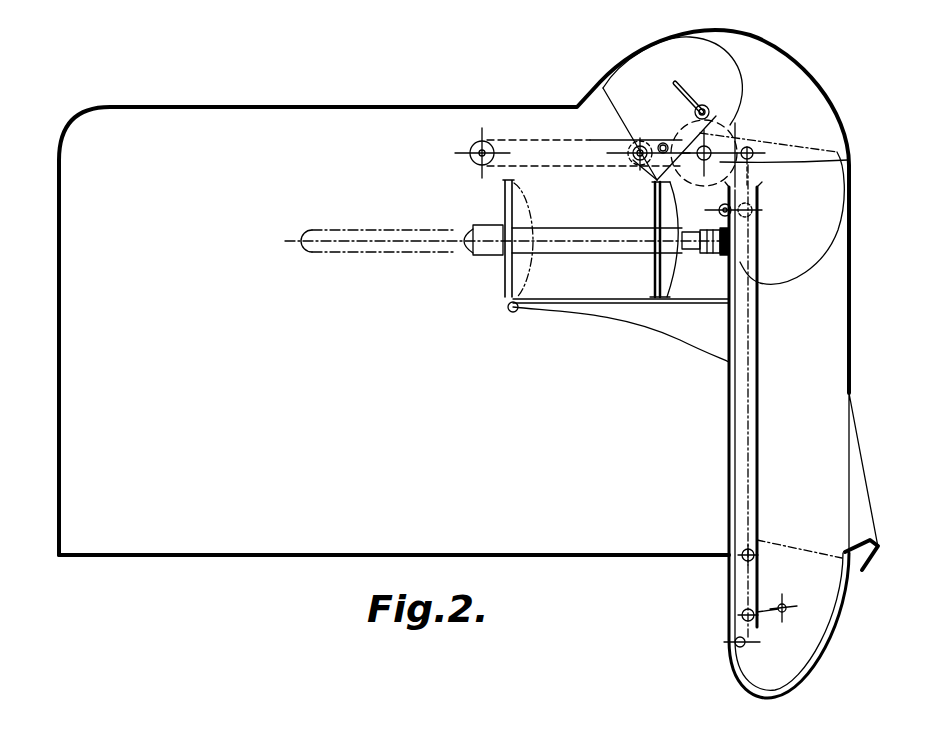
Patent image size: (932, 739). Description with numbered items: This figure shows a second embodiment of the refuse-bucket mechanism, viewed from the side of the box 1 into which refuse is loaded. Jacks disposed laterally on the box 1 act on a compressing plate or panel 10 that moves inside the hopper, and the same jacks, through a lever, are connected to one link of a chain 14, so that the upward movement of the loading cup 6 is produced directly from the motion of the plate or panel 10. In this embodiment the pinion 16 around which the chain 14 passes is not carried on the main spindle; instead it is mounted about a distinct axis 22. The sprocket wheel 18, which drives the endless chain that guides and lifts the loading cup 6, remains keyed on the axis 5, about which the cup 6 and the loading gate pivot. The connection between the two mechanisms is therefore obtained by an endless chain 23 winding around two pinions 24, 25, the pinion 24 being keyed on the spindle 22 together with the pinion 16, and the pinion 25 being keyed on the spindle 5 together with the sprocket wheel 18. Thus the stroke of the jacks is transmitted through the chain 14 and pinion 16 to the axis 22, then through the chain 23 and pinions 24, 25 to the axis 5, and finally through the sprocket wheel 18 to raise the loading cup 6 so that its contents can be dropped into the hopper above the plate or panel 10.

The box 1 is at (280, 120).
The axis 5 is at (738, 136).
The loading cup 6 is at (732, 70).
The plate or panel 10 is at (527, 253).
The chain 14 is at (520, 140).
The pinion 16 is at (637, 147).
The sprocket wheel 18 is at (711, 148).
The axis 22 is at (648, 173).
The endless chain 23 is at (676, 173).
The pinion 24 is at (634, 159).
The pinion 25 is at (800, 161).